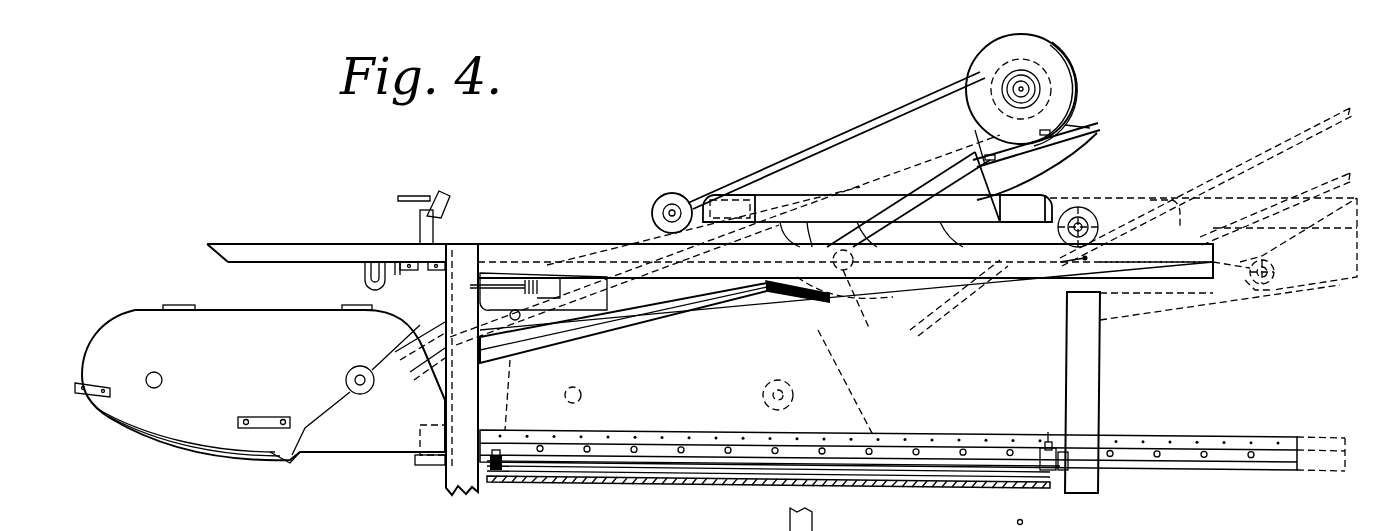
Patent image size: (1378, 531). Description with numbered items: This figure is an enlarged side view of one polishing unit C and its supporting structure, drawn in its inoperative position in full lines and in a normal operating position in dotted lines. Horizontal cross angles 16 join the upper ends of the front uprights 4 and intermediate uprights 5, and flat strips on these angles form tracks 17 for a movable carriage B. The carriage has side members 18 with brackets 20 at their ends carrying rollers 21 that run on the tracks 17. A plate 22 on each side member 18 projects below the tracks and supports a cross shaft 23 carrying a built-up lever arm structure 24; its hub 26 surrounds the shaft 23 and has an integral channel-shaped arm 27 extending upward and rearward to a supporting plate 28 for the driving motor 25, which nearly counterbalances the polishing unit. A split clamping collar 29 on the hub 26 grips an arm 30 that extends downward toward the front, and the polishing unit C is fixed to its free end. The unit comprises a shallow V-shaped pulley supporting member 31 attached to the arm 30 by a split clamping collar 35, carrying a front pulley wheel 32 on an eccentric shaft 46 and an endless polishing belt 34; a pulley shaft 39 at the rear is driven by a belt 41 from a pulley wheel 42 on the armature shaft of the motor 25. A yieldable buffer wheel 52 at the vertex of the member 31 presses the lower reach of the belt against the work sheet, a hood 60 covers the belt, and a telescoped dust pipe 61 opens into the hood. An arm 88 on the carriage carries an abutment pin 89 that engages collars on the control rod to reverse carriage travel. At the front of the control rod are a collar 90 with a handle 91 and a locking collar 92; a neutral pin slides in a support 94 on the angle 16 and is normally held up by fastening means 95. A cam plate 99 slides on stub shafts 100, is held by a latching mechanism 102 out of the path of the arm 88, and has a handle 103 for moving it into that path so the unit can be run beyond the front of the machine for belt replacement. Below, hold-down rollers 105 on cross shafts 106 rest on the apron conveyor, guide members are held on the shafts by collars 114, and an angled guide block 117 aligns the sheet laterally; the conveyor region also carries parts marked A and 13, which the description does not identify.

The front uprights 4 is at (460, 490).
The intermediate uprights 5 is at (1097, 398).
The conveyor belt 13 is at (605, 484).
The cross angles 16 is at (527, 245).
The tracks 17 is at (810, 240).
The side members 18 is at (858, 200).
The brackets 20 is at (718, 197).
The rollers 21 is at (662, 202).
The plate 22 is at (795, 235).
The cross shaft 23 is at (843, 272).
The lever arm structure 24 is at (795, 300).
The motor 25 is at (1066, 90).
The hub 26 is at (925, 300).
The channel-shaped arm 27 is at (935, 180).
The supporting plate 28 is at (1085, 130).
The split clamping collar 29 is at (770, 300).
The arm 30 is at (580, 340).
The pulley supporting member 31 is at (1132, 322).
The pulley wheel 32 is at (140, 436).
The polishing belt 34 is at (237, 460).
The split clamping collar 35 is at (436, 355).
The pulley shaft 39 is at (346, 380).
The belt 41 is at (945, 95).
The pulley wheel 42 is at (1040, 72).
The shaft 46 is at (154, 372).
The buffer wheel 52 is at (284, 463).
The hood 60 is at (240, 312).
The dust pipe 61 is at (1195, 445).
The abutment pin arm 88 is at (1272, 295).
The abutment pin 89 is at (1085, 260).
The handle collar 90 is at (403, 262).
The handle 91 is at (364, 273).
The locking collar 92 is at (432, 272).
The support 94 is at (436, 232).
The fastening means 95 is at (440, 199).
The cam plate 99 is at (552, 279).
The stub shafts 100 is at (520, 320).
The latching mechanism 102 is at (543, 291).
The handle 103 is at (489, 284).
The hold-down rollers 105 is at (1030, 455).
The cross shafts 106 is at (800, 457).
The collars 114 is at (500, 456).
The guide block 117 is at (1021, 445).
The conveyor A is at (662, 478).
The carriage B is at (1030, 200).
The polishing unit C is at (185, 469).